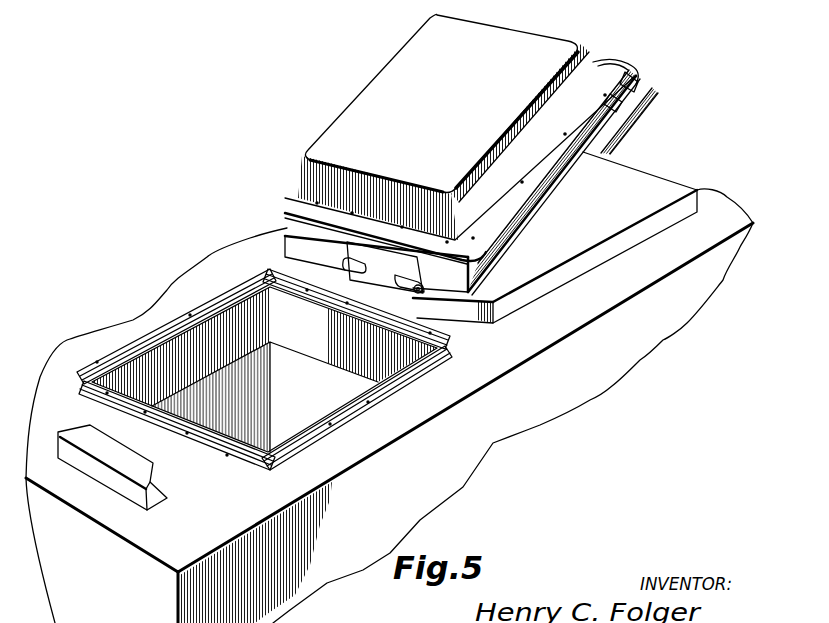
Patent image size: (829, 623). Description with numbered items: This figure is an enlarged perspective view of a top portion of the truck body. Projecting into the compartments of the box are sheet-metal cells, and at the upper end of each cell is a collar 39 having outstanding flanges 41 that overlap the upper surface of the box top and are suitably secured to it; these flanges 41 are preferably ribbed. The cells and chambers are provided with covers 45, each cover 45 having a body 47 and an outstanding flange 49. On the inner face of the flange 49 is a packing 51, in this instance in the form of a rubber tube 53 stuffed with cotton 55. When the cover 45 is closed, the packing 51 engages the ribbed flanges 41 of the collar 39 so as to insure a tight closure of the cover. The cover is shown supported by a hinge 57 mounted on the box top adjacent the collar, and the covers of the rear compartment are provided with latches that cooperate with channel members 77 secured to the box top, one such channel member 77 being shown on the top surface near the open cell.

The collar 39 is at (163, 350).
The outstanding flanges 41 is at (180, 313).
The cover 45 is at (492, 17).
The body 47 is at (547, 43).
The outstanding flange 49 is at (626, 123).
The packing 51 is at (615, 63).
The rubber tube 53 is at (640, 78).
The cotton 55 is at (622, 103).
The hinge 57 is at (462, 182).
The channel members 77 is at (389, 387).